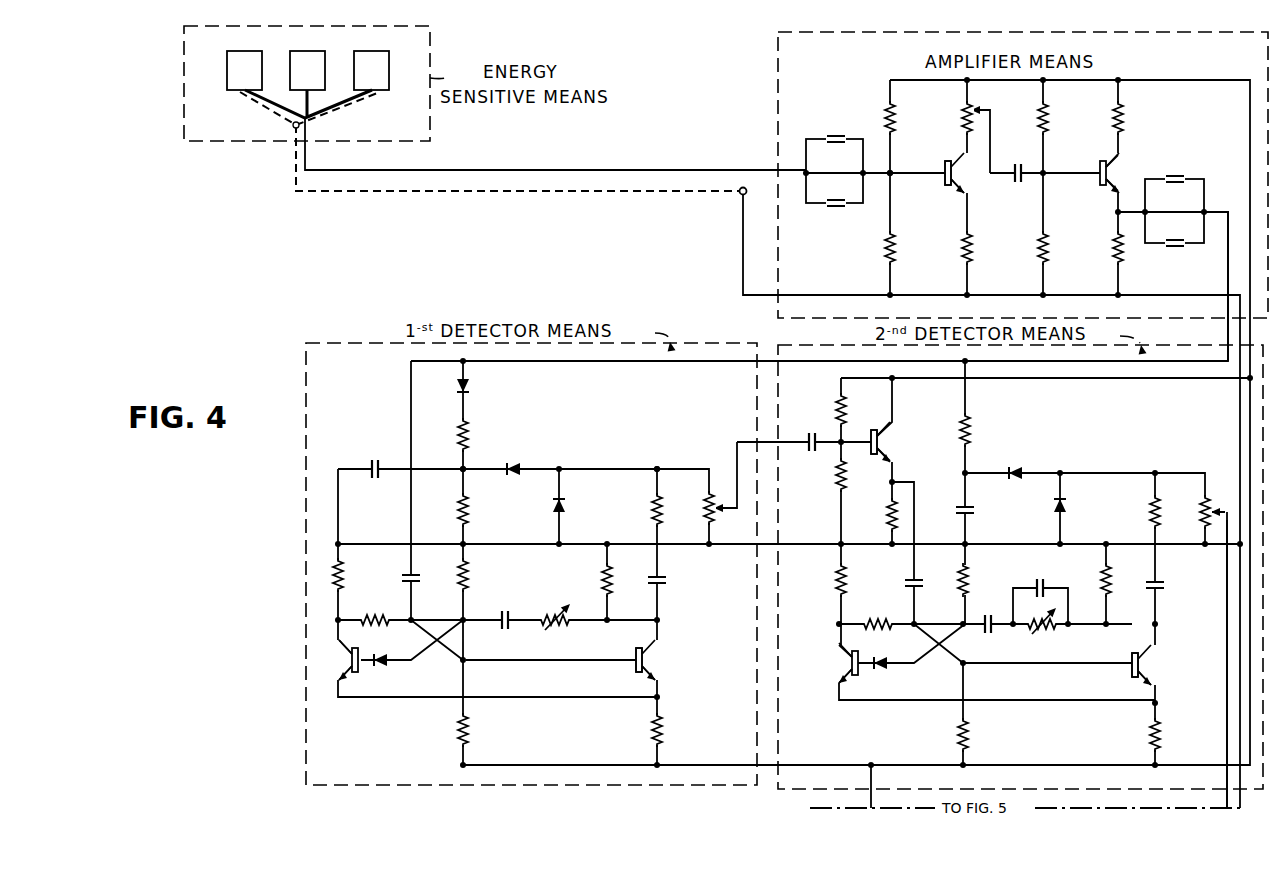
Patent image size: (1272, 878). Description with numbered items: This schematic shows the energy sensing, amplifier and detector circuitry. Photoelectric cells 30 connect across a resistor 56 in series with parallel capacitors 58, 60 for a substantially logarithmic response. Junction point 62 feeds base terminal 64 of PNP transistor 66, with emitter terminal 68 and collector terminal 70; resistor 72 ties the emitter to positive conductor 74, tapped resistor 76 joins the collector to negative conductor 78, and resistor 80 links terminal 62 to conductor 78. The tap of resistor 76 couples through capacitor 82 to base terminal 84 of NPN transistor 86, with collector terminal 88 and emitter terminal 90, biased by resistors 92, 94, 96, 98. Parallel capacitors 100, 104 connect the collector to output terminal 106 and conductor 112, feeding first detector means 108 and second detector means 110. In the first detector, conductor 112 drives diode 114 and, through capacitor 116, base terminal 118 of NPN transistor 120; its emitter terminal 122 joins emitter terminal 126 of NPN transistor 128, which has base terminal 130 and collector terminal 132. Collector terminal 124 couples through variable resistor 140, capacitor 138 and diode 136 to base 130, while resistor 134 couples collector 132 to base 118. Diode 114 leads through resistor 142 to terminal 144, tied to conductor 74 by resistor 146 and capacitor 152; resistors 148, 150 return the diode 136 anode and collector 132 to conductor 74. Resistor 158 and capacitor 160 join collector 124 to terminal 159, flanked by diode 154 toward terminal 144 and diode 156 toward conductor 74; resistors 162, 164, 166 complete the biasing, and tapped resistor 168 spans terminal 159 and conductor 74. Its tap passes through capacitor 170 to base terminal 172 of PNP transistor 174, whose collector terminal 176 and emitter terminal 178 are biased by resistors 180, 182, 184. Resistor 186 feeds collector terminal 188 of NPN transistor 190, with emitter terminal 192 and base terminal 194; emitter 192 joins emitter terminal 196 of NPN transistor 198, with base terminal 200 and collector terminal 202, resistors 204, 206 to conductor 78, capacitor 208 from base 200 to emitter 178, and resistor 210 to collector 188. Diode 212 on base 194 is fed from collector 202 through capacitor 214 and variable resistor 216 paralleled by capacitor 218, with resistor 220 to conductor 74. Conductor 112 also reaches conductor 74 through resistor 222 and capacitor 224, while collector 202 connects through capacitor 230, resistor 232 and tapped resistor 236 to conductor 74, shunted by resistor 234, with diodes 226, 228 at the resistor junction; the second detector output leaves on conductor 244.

The photoelectric cells 30 is at (378, 98).
The resistor 56 is at (895, 248).
The capacitor 58 is at (836, 208).
The capacitor 60 is at (836, 136).
The junction point 62 is at (891, 173).
The base terminal 64 is at (940, 176).
The PNP transistor 66 is at (948, 188).
The emitter terminal 68 is at (960, 186).
The collector terminal 70 is at (948, 160).
The resistor 72 is at (972, 248).
The conductor 74 is at (743, 238).
The resistor having a slidable tap 76 is at (962, 118).
The conductor 78 is at (990, 80).
The resistor 80 is at (895, 120).
The capacitor 82 is at (1018, 168).
The base terminal 84 is at (1090, 170).
The NPN transistor 86 is at (1100, 190).
The collector terminal 88 is at (1115, 165).
The emitter terminal 90 is at (1112, 158).
The resistor 92 is at (1048, 120).
The resistor 94 is at (1048, 250).
The resistor 96 is at (1123, 120).
The resistor 98 is at (1113, 250).
The capacitor 100 is at (1175, 176).
The capacitor 104 is at (1175, 248).
The output terminal 106 is at (1228, 310).
The first detector means 108 is at (342, 335).
The second detector means 110 is at (780, 340).
The conductor 112 is at (603, 362).
The diode 114 is at (470, 386).
The capacitor 116 is at (414, 574).
The base terminal 118 is at (618, 658).
The NPN transistor 120 is at (628, 672).
The emitter terminal 122 is at (655, 680).
The collector terminal 124 is at (650, 648).
The emitter terminal 126 is at (335, 688).
The NPN transistor 128 is at (348, 662).
The base terminal 130 is at (380, 654).
The collector terminal 132 is at (345, 648).
The resistor 134 is at (378, 617).
The diode 136 is at (386, 668).
The capacitor 138 is at (505, 614).
The variable resistor 140 is at (543, 612).
The resistor 142 is at (458, 434).
The terminal 144 is at (465, 472).
The resistor 146 is at (458, 509).
The resistor 148 is at (468, 572).
The resistor 150 is at (343, 572).
The capacitor 152 is at (375, 464).
The diode 154 is at (515, 464).
The diode 156 is at (554, 505).
The resistor 158 is at (653, 507).
The terminal 159 is at (657, 466).
The capacitor 160 is at (667, 580).
The resistor 162 is at (602, 578).
The resistor 164 is at (662, 730).
The resistor 166 is at (469, 730).
The resistor having a slidable tap 168 is at (705, 503).
The capacitor 170 is at (812, 436).
The base terminal 172 is at (868, 438).
The PNP transistor 174 is at (888, 440).
The collector terminal 176 is at (887, 430).
The emitter terminal 178 is at (892, 455).
The resistor 180 is at (836, 405).
The resistor 182 is at (888, 515).
The resistor 184 is at (836, 475).
The resistor 186 is at (836, 580).
The collector terminal 188 is at (845, 654).
The NPN transistor 190 is at (845, 664).
The emitter terminal 192 is at (840, 676).
The base terminal 194 is at (878, 657).
The emitter terminal 196 is at (1153, 683).
The NPN transistor 198 is at (1124, 675).
The base terminal 200 is at (1124, 662).
The collector terminal 202 is at (1150, 655).
The resistor 204 is at (1150, 735).
The resistor 206 is at (957, 735).
The capacitor 208 is at (904, 580).
The resistor 210 is at (878, 618).
The diode 212 is at (887, 670).
The capacitor 214 is at (988, 629).
The variable resistor 216 is at (1038, 630).
The capacitor 218 is at (1042, 582).
The resistor 220 is at (958, 582).
The resistor 222 is at (970, 430).
The capacitor 224 is at (970, 511).
The diode 226 is at (1055, 503).
The diode 228 is at (1016, 466).
The capacitor 230 is at (1160, 587).
The resistor 232 is at (1150, 512).
The resistor 234 is at (1100, 582).
The resistor having a slidable tap 236 is at (1210, 498).
The conductor 244 is at (1227, 752).